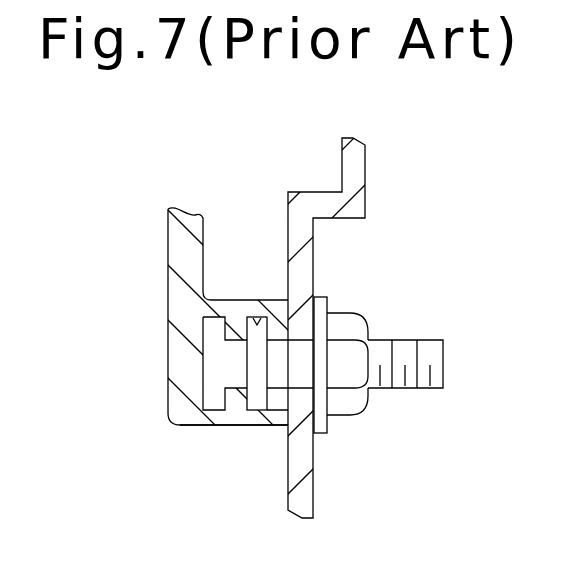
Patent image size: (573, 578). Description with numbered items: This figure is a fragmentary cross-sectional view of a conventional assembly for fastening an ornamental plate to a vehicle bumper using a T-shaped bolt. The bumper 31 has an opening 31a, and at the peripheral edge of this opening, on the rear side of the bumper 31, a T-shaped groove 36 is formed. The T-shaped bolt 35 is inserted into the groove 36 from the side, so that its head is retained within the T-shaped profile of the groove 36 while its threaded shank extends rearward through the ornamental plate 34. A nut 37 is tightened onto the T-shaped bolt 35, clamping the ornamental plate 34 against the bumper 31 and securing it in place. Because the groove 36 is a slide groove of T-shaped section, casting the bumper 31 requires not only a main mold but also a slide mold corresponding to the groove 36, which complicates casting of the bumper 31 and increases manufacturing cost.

The bumper 31 is at (168, 285).
The opening 31a is at (232, 427).
The ornamental plate 34 is at (313, 460).
The T-shaped bolt 35 is at (412, 390).
The groove 36 is at (256, 320).
The nut 37 is at (350, 320).